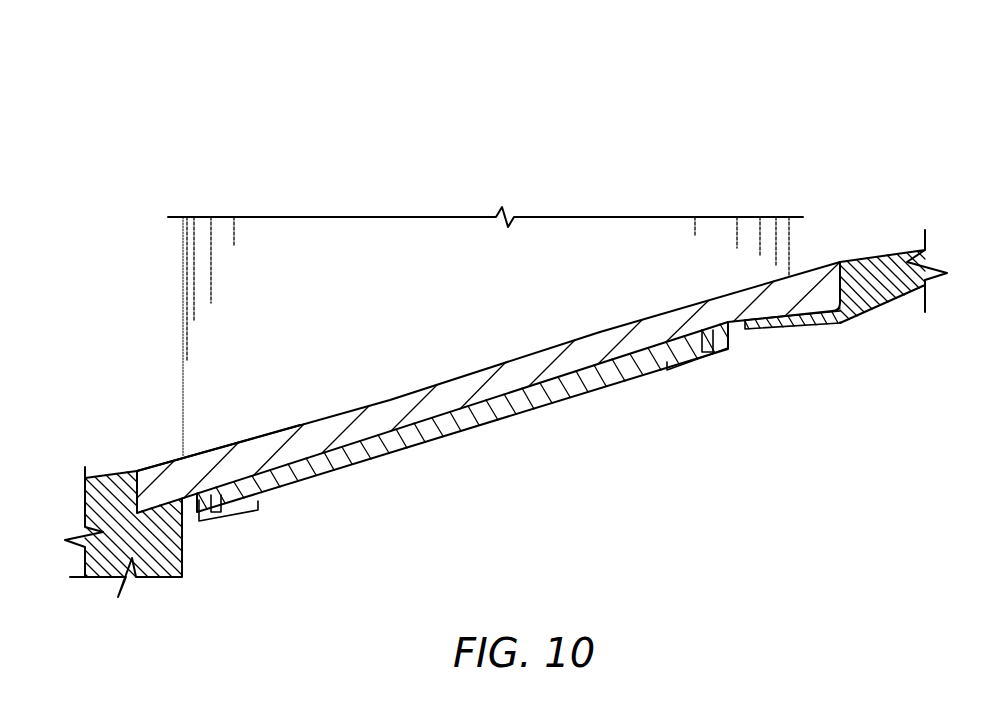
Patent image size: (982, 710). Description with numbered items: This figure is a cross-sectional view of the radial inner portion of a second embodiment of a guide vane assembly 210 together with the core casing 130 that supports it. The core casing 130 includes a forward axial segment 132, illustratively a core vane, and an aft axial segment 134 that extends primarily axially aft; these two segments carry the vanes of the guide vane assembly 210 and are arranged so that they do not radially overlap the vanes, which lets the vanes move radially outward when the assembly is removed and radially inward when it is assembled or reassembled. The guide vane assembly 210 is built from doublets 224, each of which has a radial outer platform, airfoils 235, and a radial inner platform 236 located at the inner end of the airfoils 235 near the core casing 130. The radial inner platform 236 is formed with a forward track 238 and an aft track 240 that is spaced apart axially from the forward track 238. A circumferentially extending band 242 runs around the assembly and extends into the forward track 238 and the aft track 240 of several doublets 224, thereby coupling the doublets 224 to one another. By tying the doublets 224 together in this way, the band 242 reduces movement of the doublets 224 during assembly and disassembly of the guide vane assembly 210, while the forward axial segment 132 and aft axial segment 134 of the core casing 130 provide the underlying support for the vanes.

The guide vane assembly 210 is at (130, 66).
The doublets 224 is at (103, 238).
The airfoils 235 is at (425, 262).
The radial inner platform 236 is at (148, 460).
The forward track 238 is at (227, 519).
The aft track 240 is at (690, 358).
The circumferentially extending band 242 is at (425, 443).
The core casing 130 is at (767, 408).
The forward axial segment 132 is at (155, 573).
The aft axial segment 134 is at (877, 303).